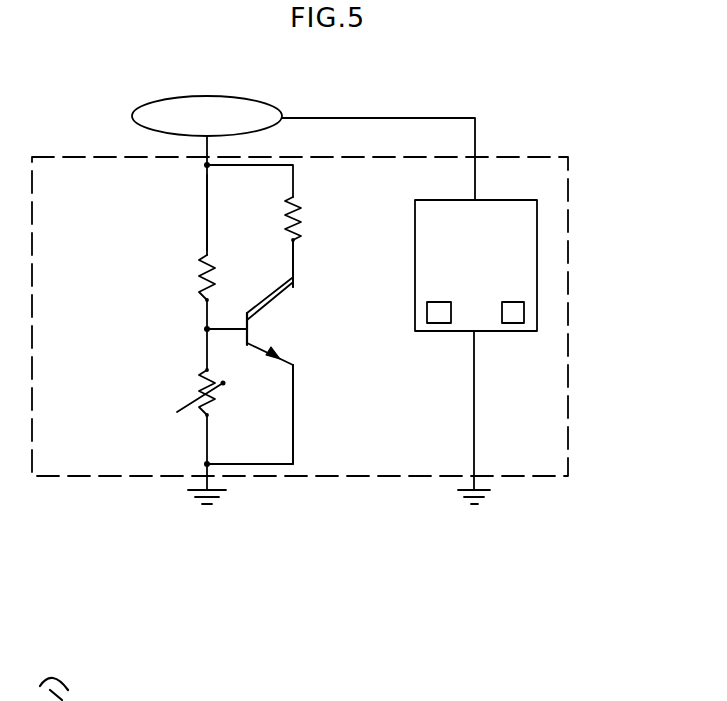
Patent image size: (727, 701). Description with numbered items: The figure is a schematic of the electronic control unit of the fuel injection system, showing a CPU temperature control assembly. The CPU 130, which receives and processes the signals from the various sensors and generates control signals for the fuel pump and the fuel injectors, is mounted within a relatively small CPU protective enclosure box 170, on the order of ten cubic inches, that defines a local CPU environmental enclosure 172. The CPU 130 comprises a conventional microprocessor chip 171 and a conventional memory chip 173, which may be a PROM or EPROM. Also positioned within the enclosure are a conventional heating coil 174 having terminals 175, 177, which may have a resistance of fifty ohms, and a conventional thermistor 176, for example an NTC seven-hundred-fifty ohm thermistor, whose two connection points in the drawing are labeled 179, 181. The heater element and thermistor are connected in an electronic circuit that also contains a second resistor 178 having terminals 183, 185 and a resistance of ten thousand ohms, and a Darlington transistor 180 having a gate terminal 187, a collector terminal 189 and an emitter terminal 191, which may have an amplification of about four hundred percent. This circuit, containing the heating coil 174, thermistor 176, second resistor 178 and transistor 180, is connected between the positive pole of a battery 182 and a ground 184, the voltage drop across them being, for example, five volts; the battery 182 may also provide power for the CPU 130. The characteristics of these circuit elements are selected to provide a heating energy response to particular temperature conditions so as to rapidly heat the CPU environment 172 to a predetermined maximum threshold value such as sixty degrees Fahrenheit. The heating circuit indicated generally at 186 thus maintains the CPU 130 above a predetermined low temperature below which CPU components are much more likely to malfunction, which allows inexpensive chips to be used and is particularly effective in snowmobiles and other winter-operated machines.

The CPU 130 is at (478, 289).
The CPU protective enclosure box 170 is at (568, 178).
The microprocessor chip 171 is at (436, 316).
The CPU environmental enclosure 172 is at (530, 378).
The memory chip 173 is at (511, 316).
The heating coil 174 is at (293, 205).
The terminal 175 is at (293, 165).
The thermistor 176 is at (207, 372).
The terminal 177 is at (293, 240).
The second resistor 178 is at (207, 258).
The node 179 is at (207, 370).
The Darlington transistor 180 is at (280, 293).
The node 181 is at (207, 415).
The battery 182 is at (232, 97).
The terminal 183 is at (207, 232).
The ground 184 is at (200, 507).
The terminal 185 is at (207, 300).
The heating circuit 186 is at (132, 177).
The gate terminal 187 is at (218, 329).
The collector terminal 189 is at (293, 262).
The emitter terminal 191 is at (293, 365).